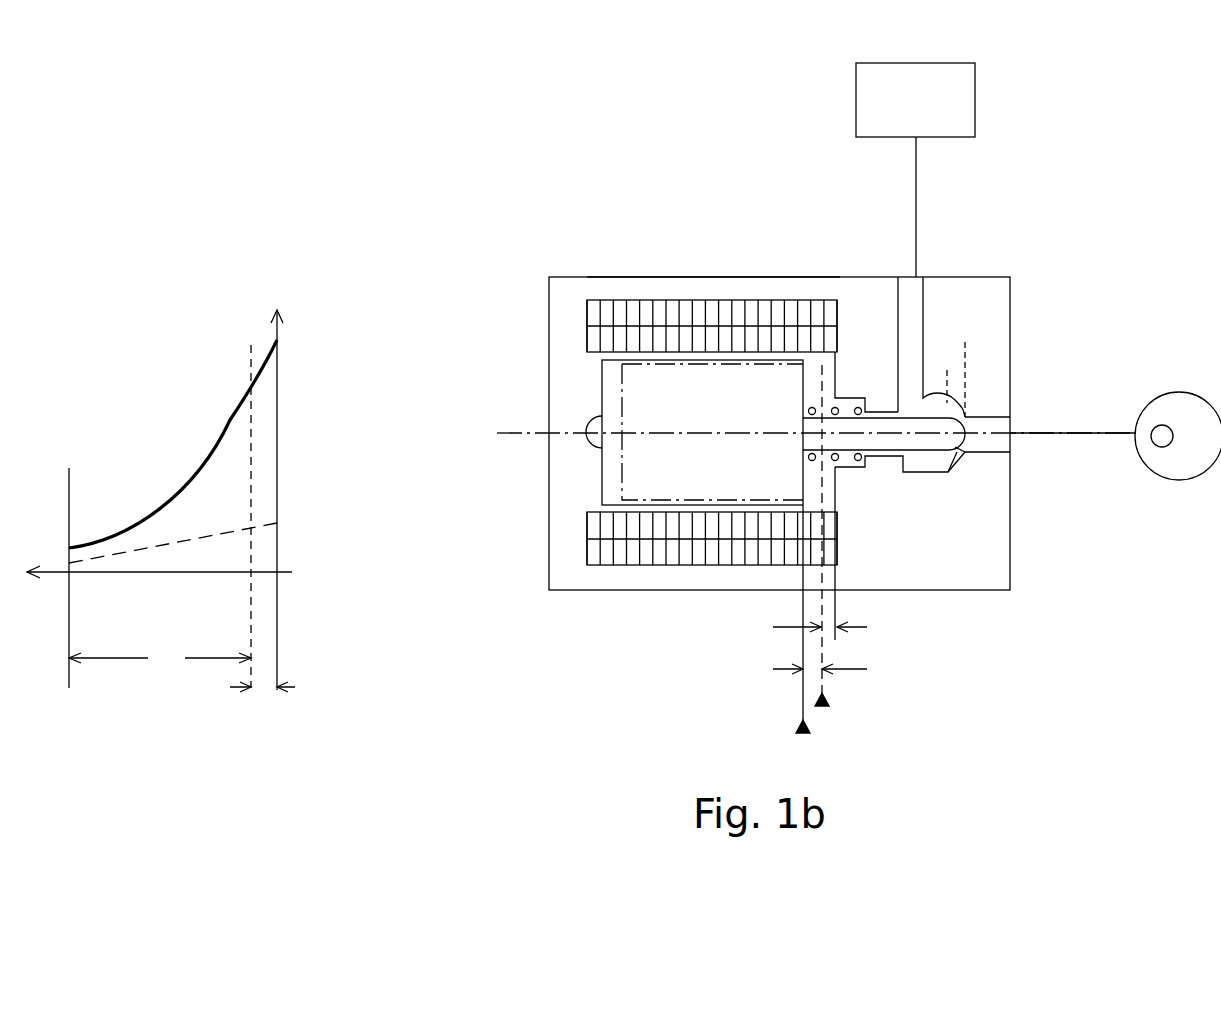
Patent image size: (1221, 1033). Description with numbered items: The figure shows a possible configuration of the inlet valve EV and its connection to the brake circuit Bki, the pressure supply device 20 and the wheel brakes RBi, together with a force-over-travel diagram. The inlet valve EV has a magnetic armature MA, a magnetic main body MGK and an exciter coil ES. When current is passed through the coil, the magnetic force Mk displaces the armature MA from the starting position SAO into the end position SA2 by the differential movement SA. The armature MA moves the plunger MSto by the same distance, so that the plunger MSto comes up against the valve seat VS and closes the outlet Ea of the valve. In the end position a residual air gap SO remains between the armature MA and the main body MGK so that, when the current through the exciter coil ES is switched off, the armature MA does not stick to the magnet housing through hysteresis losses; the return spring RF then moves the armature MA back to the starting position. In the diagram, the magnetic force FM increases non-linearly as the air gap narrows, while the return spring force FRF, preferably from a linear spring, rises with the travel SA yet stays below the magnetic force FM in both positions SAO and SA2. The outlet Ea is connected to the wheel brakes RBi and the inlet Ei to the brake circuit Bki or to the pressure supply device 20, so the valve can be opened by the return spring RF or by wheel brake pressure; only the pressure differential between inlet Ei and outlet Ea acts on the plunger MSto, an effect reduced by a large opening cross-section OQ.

The inlet valve EV is at (575, 275).
The exciter coil ES is at (618, 315).
The magnetic main body MGK is at (712, 290).
The magnetic armature MA is at (612, 373).
The return spring RF is at (812, 420).
The magnetic force Mk is at (788, 397).
The inlet Ei is at (893, 290).
The outlet Ea is at (990, 425).
The valve seat VS is at (960, 455).
The opening cross-section OQ is at (957, 453).
The plunger MSto is at (937, 440).
The pressure supply device 20 is at (915, 100).
The brake circuit Bki is at (916, 155).
The wheel brakes RBi is at (1180, 465).
The starting position SAO is at (508, 557).
The end position SA2 is at (621, 527).
The differential movement SA is at (487, 668).
The residual air gap SO is at (566, 664).
The magnetic force curve FM is at (205, 457).
The return spring force FRF is at (265, 525).